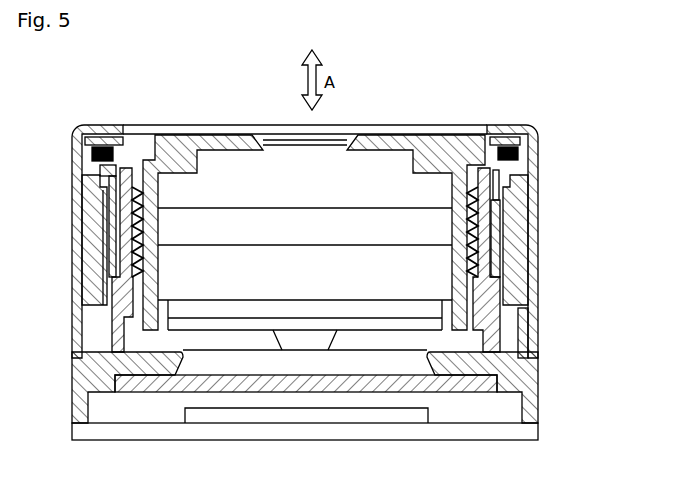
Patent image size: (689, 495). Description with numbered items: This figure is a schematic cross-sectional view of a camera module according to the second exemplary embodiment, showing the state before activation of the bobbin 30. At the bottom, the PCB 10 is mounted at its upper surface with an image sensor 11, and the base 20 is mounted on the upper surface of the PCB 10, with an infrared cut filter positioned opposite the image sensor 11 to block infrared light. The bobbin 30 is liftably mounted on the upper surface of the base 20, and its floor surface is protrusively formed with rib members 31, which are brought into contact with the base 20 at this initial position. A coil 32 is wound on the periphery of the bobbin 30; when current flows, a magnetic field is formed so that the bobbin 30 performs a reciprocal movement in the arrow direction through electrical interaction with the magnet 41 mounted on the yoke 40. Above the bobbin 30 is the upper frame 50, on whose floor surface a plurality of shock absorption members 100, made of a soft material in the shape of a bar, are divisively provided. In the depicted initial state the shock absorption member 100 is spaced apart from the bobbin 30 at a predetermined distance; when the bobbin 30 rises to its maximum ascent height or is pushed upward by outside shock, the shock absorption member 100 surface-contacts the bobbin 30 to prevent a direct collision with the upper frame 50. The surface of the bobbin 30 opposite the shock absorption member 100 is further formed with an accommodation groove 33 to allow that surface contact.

The PCB 10 is at (528, 431).
The image sensor 11 is at (345, 415).
The base 20 is at (528, 371).
The bobbin 30 is at (485, 168).
The rib member 31 is at (497, 331).
The coil 32 is at (498, 236).
The accommodation groove 33 is at (103, 170).
The yoke 40 is at (528, 127).
The magnet 41 is at (524, 213).
The upper frame 50 is at (516, 142).
The shock absorption member 100 is at (92, 152).